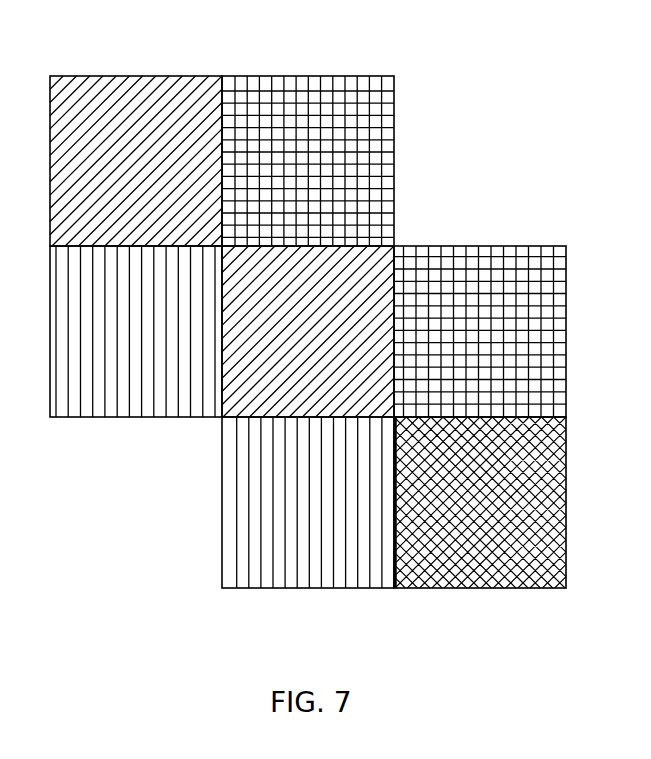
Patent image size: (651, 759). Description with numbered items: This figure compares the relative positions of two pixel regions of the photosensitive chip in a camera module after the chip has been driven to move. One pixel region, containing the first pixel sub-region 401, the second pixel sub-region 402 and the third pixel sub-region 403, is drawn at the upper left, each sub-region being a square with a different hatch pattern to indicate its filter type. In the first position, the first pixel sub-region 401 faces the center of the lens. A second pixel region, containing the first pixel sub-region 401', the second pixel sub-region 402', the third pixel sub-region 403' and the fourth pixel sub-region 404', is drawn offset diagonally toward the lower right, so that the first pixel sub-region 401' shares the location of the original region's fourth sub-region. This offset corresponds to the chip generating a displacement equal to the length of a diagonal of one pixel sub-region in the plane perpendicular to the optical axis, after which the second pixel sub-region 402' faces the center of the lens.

The first pixel sub-region 401 is at (136, 137).
The second pixel sub-region 402 is at (310, 138).
The third pixel sub-region 403 is at (136, 362).
The first pixel sub-region 401' is at (353, 280).
The second pixel sub-region 402' is at (480, 310).
The third pixel sub-region 403' is at (308, 533).
The fourth pixel sub-region 404' is at (480, 535).